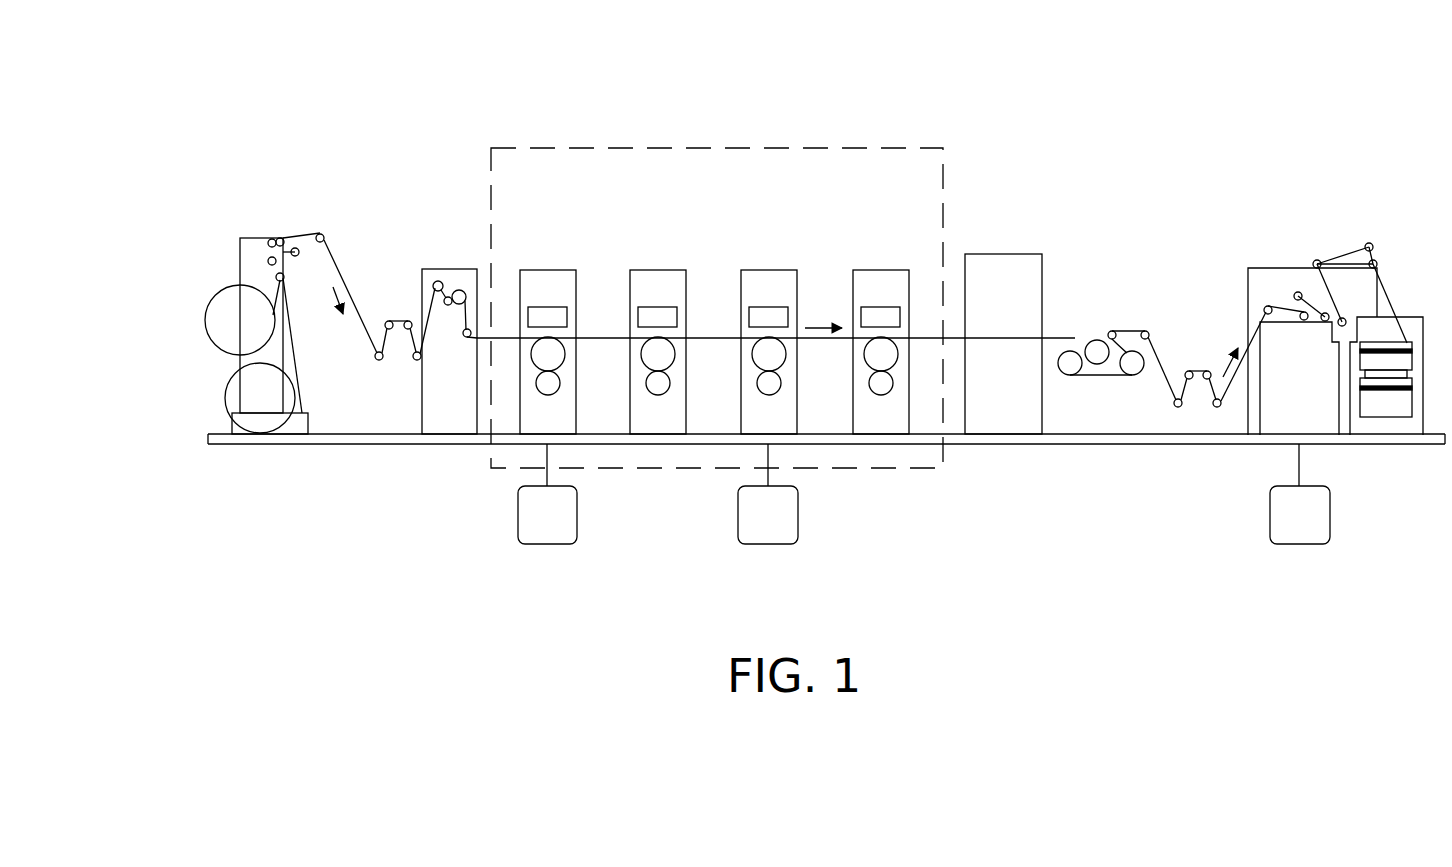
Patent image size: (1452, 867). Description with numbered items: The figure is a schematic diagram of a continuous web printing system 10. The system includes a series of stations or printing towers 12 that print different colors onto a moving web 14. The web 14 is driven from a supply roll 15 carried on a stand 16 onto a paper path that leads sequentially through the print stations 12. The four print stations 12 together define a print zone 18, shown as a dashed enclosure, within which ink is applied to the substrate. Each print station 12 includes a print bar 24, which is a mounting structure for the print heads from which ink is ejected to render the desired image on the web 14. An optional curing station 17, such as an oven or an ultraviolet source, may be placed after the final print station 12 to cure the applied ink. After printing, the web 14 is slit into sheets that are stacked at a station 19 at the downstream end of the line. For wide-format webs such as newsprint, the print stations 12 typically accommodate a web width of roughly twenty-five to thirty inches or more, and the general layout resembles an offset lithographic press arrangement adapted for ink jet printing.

The continuous web printing system 10 is at (196, 114).
The printing towers 12 is at (547, 270).
The web 14 is at (338, 265).
The supply roll 15 is at (205, 322).
The stand 16 is at (253, 237).
The curing station 17 is at (1003, 253).
The print zone 18 is at (768, 148).
The station 19 is at (1272, 268).
The print bar 24 is at (548, 305).